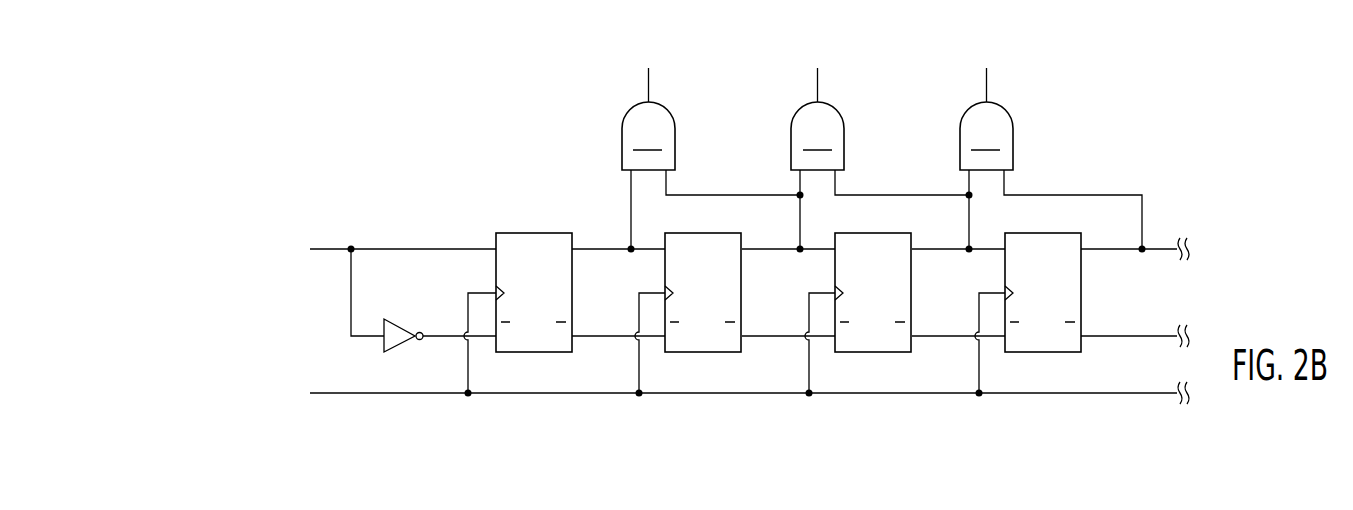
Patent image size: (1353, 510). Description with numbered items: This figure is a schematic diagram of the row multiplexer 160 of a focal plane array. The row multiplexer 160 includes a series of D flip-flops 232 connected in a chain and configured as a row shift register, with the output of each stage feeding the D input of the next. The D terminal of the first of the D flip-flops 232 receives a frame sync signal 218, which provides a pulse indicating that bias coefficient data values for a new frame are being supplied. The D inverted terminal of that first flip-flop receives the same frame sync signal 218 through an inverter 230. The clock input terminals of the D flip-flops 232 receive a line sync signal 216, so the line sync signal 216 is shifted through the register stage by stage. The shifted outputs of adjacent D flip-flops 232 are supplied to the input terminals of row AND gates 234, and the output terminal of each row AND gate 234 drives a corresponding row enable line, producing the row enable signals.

The row multiplexer 160 is at (345, 92).
The frame sync signal 218 is at (201, 257).
The line sync signal 216 is at (216, 384).
The inverter 230 is at (398, 322).
The D flip-flop 232 is at (546, 352).
The row AND gate 234 is at (817, 136).